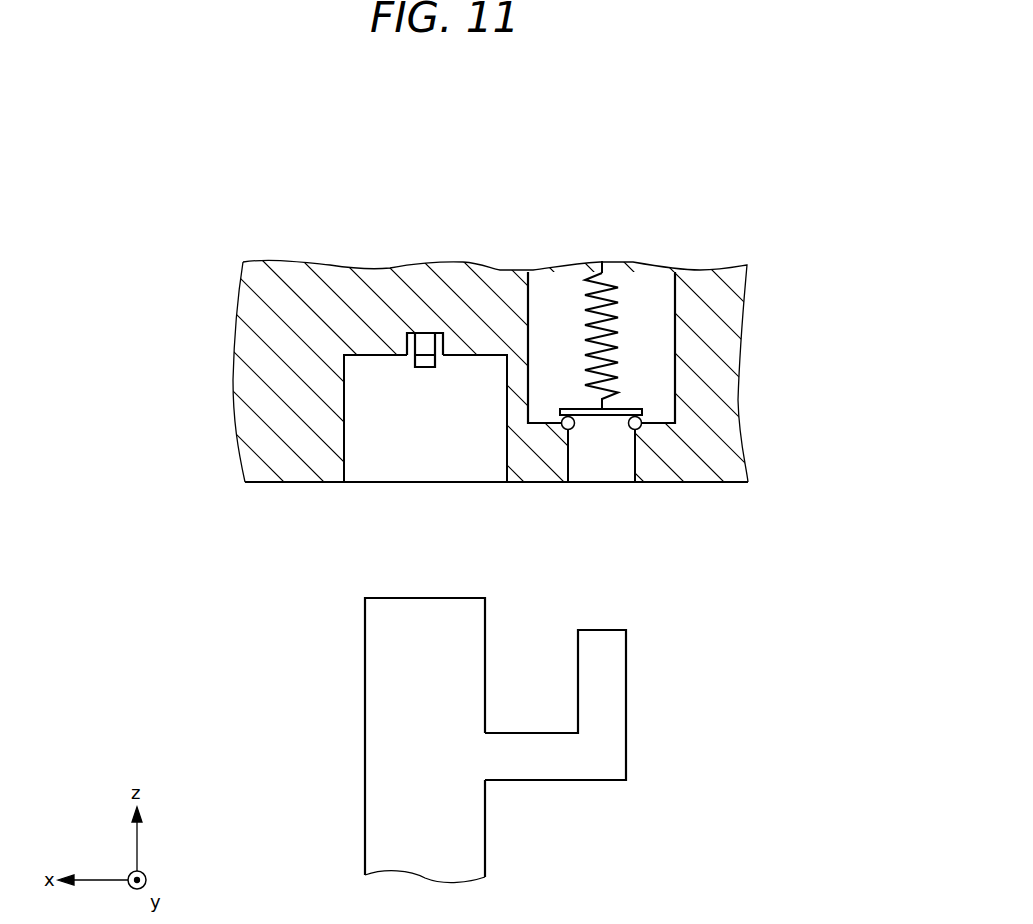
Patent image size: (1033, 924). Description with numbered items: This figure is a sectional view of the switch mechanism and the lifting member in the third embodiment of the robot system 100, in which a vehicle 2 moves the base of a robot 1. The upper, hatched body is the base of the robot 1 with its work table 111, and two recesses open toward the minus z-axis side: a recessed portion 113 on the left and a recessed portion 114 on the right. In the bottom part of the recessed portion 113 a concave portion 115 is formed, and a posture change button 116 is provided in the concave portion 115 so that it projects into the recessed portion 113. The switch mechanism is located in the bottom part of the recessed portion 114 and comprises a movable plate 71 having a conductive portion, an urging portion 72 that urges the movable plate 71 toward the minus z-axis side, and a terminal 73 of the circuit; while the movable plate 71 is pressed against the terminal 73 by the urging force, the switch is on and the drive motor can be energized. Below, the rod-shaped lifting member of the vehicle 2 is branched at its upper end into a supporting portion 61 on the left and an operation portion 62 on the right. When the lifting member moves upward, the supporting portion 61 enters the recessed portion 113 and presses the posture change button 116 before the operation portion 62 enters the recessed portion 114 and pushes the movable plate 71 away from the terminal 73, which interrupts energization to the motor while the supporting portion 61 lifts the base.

The robot 1 is at (752, 368).
The robot system 100 is at (668, 174).
The work table 111 is at (278, 450).
The recessed portion 113 is at (343, 450).
The recessed portion 114 is at (633, 465).
The concave portion 115 is at (420, 335).
The posture change button 116 is at (430, 358).
The movable plate 71 is at (580, 408).
The urging portion 72 is at (612, 317).
The terminal 73 is at (641, 429).
The vehicle 2 is at (533, 740).
The supporting portion 61 is at (395, 683).
The operation portion 62 is at (607, 673).